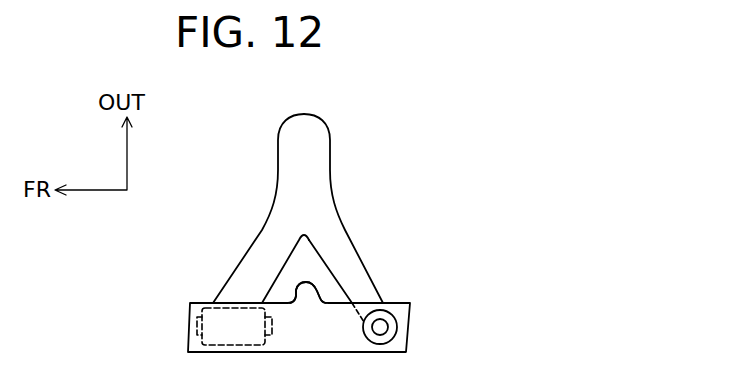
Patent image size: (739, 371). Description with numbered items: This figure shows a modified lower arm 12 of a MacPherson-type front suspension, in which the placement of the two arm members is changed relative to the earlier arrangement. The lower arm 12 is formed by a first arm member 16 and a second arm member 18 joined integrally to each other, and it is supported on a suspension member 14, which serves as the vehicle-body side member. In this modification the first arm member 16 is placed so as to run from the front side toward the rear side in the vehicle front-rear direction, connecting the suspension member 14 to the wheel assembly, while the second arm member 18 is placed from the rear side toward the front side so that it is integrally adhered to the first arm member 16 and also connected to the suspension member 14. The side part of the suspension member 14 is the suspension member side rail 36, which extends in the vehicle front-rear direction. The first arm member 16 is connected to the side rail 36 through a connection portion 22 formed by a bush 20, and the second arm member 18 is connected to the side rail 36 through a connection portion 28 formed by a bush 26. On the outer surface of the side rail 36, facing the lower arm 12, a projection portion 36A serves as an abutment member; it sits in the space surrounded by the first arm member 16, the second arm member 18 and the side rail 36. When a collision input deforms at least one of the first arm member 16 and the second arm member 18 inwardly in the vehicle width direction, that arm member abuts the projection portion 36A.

The lower arm 12 is at (451, 127).
The suspension member 14 is at (269, 305).
The first arm member 16 is at (255, 242).
The second arm member 18 is at (355, 253).
The bush 20 is at (190, 322).
The connection portion 22 is at (214, 291).
The bush 26 is at (398, 323).
The connection portion 28 is at (392, 297).
The suspension member side rail 36 is at (188, 345).
The projection portion 36A is at (303, 283).